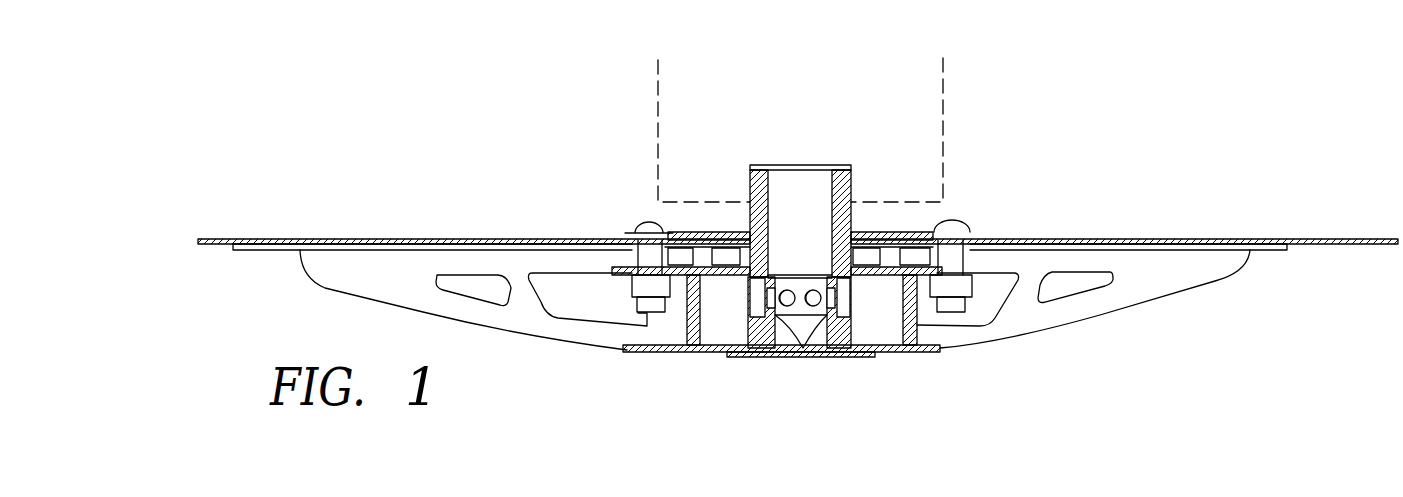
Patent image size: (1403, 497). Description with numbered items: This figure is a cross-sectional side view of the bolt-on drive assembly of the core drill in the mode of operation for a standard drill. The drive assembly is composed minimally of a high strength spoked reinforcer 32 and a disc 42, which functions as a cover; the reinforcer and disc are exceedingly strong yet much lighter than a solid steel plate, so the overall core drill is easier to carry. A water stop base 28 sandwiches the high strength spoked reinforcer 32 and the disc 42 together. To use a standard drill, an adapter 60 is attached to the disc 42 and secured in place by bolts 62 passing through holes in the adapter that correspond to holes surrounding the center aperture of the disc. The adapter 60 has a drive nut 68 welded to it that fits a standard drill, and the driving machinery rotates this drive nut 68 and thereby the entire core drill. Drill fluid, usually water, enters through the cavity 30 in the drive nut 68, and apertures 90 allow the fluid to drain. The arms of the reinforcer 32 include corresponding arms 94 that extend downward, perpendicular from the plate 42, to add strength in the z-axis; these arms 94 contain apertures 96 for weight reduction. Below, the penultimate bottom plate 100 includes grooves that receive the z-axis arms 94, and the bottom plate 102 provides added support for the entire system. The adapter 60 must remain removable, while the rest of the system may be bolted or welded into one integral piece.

The water stop base 28 is at (718, 235).
The cavity 30 is at (809, 208).
The high strength spoked reinforcer 32 is at (1280, 250).
The disc 42 is at (1370, 238).
The adapter 60 is at (890, 233).
The bolts 62 is at (641, 251).
The drive nut 68 is at (811, 205).
The apertures 90 is at (803, 348).
The arms 94 is at (1132, 283).
The apertures 96 is at (592, 322).
The penultimate bottom plate 100 is at (643, 352).
The bottom plate 102 is at (857, 357).